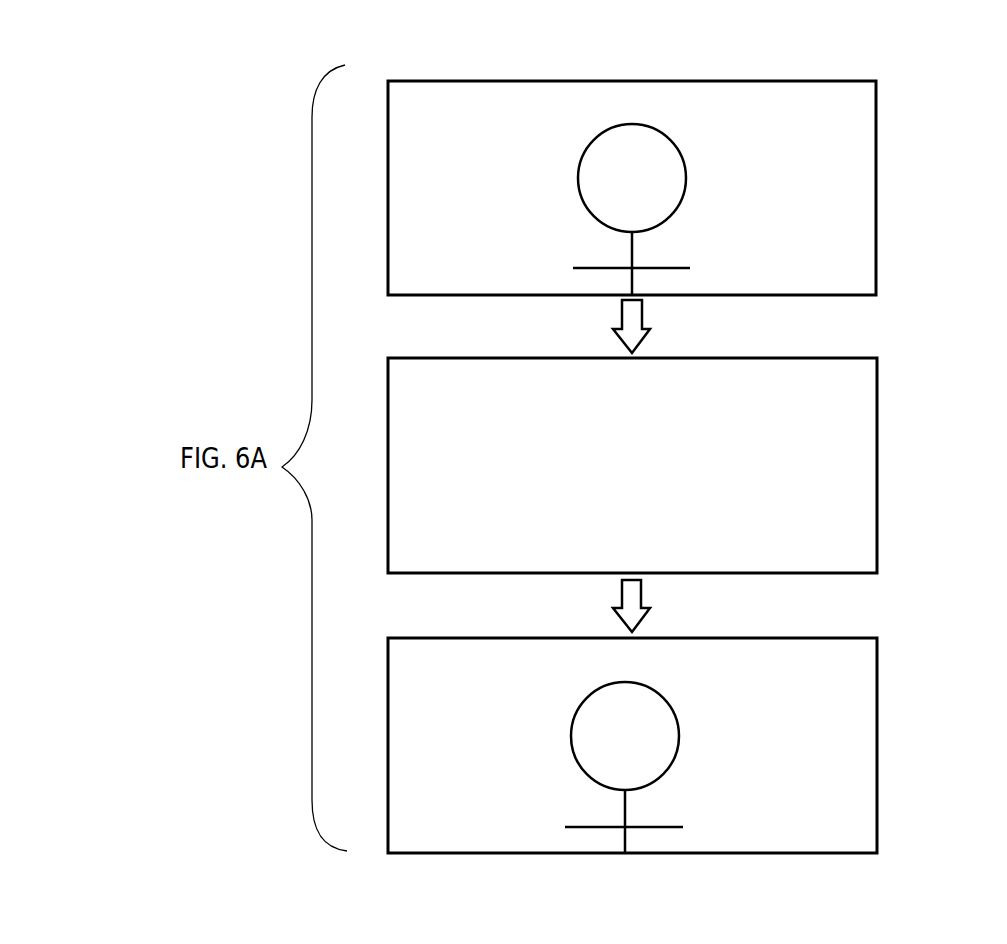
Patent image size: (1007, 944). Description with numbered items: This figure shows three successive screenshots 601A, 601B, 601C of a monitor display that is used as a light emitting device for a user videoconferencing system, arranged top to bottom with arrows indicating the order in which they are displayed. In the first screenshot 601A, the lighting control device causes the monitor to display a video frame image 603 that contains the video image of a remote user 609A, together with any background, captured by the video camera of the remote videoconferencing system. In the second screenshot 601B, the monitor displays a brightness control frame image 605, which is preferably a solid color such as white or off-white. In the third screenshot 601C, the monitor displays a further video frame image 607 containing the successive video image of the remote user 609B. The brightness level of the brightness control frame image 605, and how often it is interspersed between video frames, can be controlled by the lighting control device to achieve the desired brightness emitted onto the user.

The screenshot 601A is at (876, 135).
The screenshot 601B is at (877, 415).
The screenshot 601C is at (877, 705).
The video frame image 603 is at (815, 159).
The brightness control frame image 605 is at (815, 437).
The video frame image 607 is at (815, 709).
The video image of a remote user 609A is at (670, 137).
The successive video image of the remote user 609B is at (663, 690).